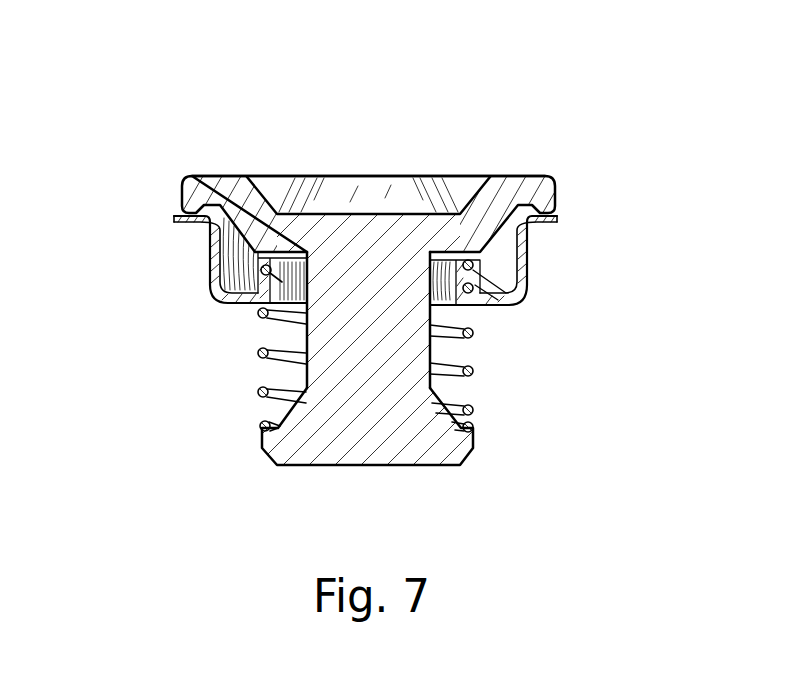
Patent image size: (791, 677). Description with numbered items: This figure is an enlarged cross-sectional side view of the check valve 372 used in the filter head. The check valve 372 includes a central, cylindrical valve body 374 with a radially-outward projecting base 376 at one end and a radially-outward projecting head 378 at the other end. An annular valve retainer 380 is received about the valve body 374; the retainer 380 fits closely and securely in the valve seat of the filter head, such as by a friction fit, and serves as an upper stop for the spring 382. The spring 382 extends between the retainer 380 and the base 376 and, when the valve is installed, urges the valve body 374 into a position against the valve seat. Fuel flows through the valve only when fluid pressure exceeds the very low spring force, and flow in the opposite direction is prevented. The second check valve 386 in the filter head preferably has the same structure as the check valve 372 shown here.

The first check valve 372 is at (490, 112).
The valve body 374 is at (420, 353).
The base 376 is at (453, 452).
The head 378 is at (531, 188).
The valve retainer 380 is at (213, 260).
The spring 382 is at (258, 350).
The second check valve 386 is at (200, 122).